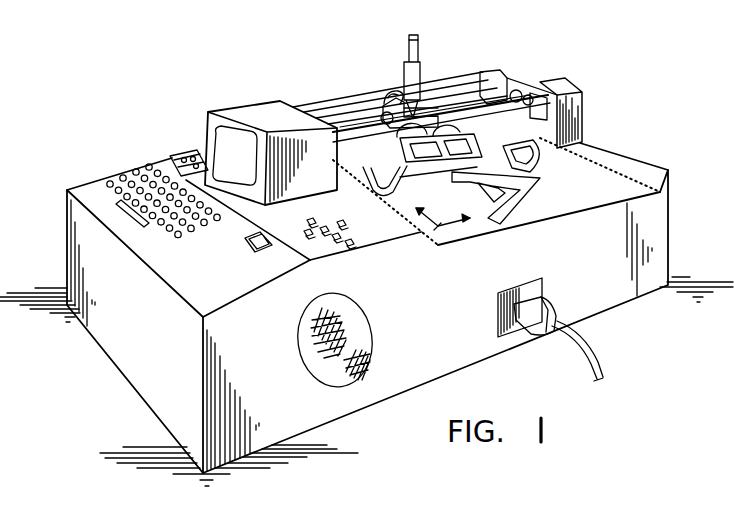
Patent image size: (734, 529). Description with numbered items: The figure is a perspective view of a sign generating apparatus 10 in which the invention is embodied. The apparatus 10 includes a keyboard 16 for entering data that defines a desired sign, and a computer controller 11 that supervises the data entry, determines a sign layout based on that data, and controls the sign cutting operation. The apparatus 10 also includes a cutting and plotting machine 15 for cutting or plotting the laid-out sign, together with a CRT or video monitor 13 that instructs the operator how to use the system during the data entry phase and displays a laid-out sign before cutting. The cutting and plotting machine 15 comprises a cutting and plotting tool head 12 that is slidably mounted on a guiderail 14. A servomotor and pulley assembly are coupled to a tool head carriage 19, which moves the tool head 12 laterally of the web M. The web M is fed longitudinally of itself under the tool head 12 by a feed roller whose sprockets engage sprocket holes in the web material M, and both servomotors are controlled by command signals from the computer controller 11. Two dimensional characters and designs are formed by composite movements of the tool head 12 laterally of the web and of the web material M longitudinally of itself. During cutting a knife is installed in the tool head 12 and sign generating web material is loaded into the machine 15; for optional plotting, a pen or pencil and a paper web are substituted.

The sign generating apparatus 10 is at (526, 50).
The computer controller 11 is at (209, 56).
The cutting and plotting tool head 12 is at (385, 80).
The CRT or video monitor 13 is at (258, 176).
The guiderail 14 is at (513, 97).
The cutting and plotting machine 15 is at (477, 72).
The keyboard 16 is at (125, 166).
The tool head carriage 19 is at (386, 100).
The web M is at (571, 176).